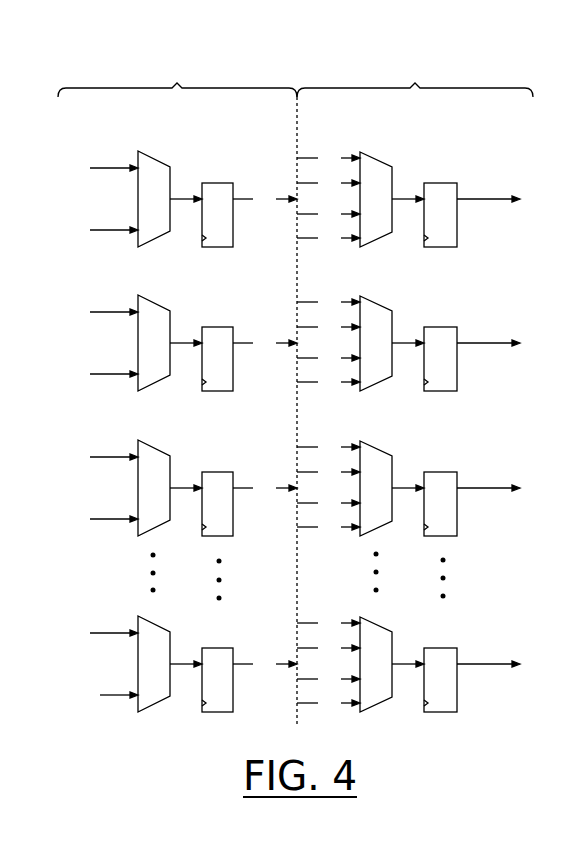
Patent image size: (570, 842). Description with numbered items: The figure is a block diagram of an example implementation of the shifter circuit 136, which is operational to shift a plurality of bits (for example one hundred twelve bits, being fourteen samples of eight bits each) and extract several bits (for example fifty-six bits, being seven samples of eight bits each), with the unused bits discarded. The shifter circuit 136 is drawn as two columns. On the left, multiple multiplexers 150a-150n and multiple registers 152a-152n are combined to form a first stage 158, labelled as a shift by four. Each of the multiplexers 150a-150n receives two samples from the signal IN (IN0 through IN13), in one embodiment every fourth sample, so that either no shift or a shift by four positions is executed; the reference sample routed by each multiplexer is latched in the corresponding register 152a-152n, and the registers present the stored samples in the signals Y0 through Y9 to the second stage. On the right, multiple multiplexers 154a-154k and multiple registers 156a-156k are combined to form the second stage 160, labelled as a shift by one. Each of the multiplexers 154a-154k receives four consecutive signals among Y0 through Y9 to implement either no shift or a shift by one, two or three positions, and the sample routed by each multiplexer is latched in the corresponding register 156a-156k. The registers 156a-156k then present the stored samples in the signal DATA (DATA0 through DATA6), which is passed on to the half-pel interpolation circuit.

The shifter circuit 136 is at (90, 57).
The first stage 158 is at (177, 96).
The second stage 160 is at (415, 96).
The multiplexer 150a is at (152, 154).
The multiplexer 150n is at (152, 619).
The register 152a is at (218, 248).
The register 152n is at (218, 713).
The multiplexer 154a is at (372, 153).
The multiplexer 154k is at (372, 618).
The register 156a is at (440, 248).
The register 156k is at (440, 713).